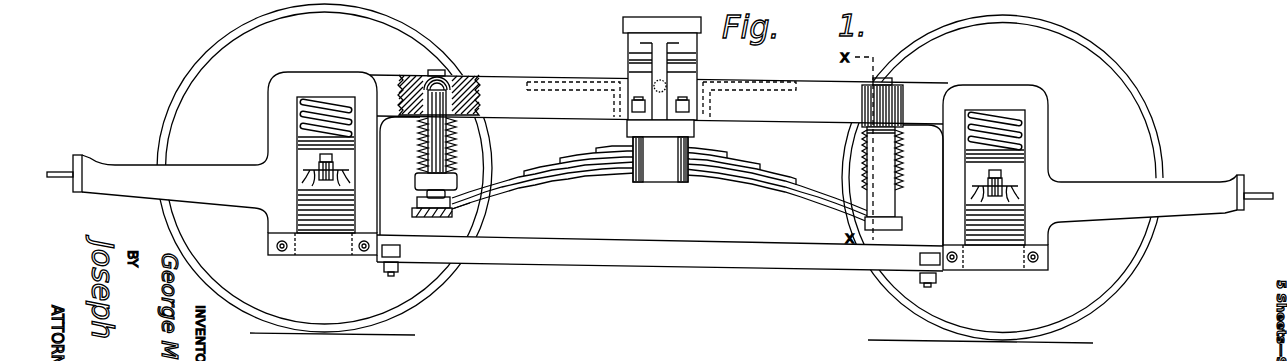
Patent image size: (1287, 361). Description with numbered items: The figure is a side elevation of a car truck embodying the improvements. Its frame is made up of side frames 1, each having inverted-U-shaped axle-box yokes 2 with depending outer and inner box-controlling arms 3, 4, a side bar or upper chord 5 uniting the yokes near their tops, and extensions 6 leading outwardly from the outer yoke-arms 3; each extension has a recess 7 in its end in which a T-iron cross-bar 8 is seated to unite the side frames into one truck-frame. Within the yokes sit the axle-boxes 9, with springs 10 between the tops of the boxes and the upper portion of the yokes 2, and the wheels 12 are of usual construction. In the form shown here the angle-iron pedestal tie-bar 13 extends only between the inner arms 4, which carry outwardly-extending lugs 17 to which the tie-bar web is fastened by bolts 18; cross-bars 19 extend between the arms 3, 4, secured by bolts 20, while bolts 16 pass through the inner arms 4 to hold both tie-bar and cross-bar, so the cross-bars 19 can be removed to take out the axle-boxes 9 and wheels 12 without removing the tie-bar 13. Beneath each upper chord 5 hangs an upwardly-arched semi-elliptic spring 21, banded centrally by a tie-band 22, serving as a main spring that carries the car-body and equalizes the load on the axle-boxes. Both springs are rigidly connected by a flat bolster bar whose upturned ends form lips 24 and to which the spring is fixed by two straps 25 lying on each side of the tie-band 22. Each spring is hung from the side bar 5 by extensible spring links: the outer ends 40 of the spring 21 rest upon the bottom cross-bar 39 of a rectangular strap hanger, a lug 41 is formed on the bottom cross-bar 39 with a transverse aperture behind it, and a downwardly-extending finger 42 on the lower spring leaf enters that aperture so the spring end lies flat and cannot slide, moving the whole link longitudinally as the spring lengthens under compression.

The side frame 1 is at (516, 69).
The axle-box yoke 2 is at (318, 81).
The outer box-controlling arm 3 is at (293, 197).
The inner box-controlling arm 4 is at (374, 188).
The side bar or upper chord 5 is at (543, 117).
The extension 6 is at (182, 175).
The recess 7 is at (72, 188).
The T-iron cross-bar 8 is at (72, 173).
The axle-box 9 is at (1010, 171).
The spring 10 is at (420, 133).
The wheel 12 is at (660, 172).
The angle-iron pedestal tie-bar 13 is at (712, 245).
The bolt 16 is at (360, 253).
The lug 17 is at (917, 260).
The bolt 18 is at (393, 273).
The cross-bar 19 is at (318, 251).
The bolt 20 is at (279, 254).
The semi-elliptic spring 21 is at (591, 173).
The central tie-band 22 is at (661, 183).
The upturned lip 24 is at (697, 128).
The strap 25 is at (637, 183).
The bottom cross-bar 39 is at (471, 1).
The outer end of spring 40 is at (473, 207).
The lug 41 is at (417, 205).
The finger or lug 42 is at (410, 214).